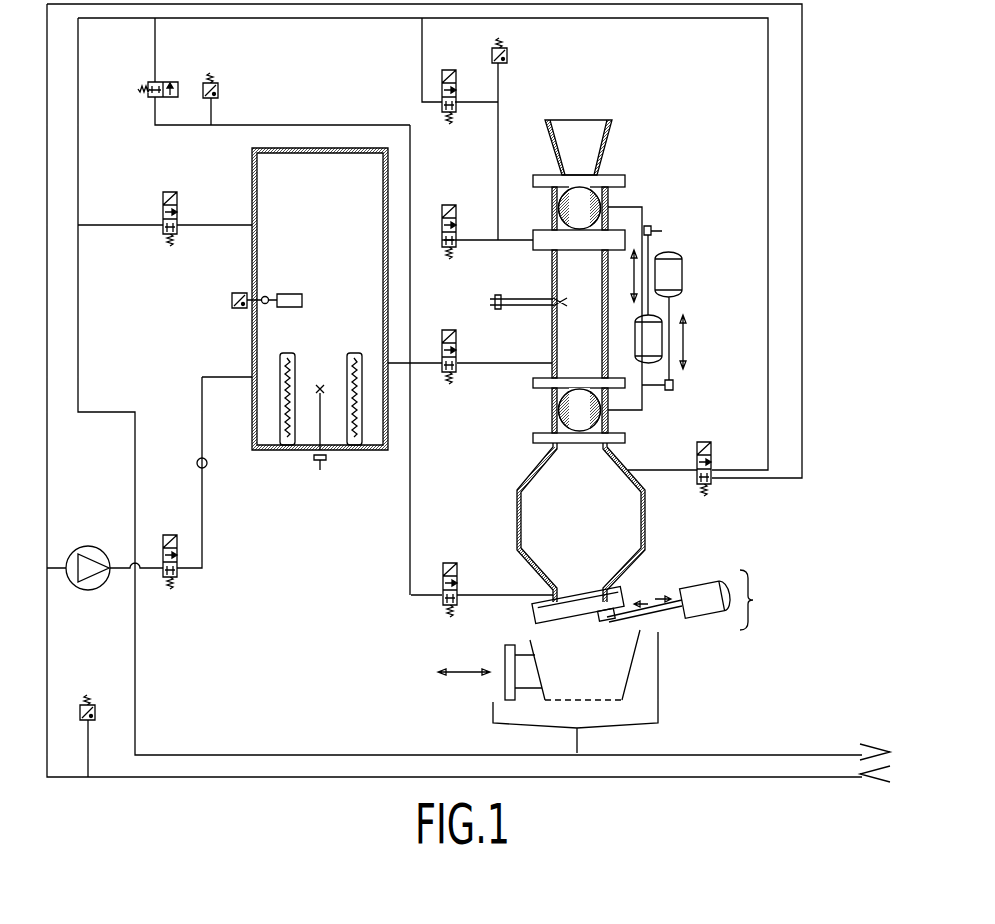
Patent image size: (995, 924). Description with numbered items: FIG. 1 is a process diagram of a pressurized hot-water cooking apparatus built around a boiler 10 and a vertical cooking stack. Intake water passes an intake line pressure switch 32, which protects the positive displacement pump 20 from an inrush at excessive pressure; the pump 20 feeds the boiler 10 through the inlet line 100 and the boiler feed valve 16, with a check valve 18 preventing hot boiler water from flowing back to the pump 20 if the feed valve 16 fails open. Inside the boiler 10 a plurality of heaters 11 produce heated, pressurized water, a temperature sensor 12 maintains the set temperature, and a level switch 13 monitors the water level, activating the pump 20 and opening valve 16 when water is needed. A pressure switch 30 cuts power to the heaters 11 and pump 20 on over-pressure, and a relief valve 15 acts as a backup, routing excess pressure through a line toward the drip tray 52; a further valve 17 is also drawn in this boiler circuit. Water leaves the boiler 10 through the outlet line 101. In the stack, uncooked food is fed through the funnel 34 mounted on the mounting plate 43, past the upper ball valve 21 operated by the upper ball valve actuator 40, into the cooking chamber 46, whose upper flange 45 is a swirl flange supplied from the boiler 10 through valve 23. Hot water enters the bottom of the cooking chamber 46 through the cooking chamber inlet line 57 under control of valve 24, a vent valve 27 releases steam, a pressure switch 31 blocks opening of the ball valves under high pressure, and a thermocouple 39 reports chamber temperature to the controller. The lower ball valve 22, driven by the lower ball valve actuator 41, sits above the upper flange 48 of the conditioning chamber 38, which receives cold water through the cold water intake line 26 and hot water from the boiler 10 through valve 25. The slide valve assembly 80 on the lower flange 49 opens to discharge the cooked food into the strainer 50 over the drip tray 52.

The boiler 10 is at (318, 147).
The heater 11 is at (284, 440).
The temperature sensor 12 is at (321, 462).
The level switch 13 is at (232, 302).
The relief valve 15 is at (150, 98).
The boiler feed valve 16 is at (180, 578).
The valve 17 is at (163, 228).
The check valve 18 is at (200, 458).
The positive displacement pump 20 is at (85, 545).
The upper ball valve 21 is at (608, 205).
The lower ball valve 22 is at (552, 411).
The valve 23 is at (449, 204).
The valve 24 is at (448, 330).
The hot water intake valve 25 is at (443, 568).
The cold water intake line 26 is at (705, 440).
The vent valve 27 is at (442, 76).
The pressure switch 30 is at (218, 88).
The pressure switch 31 is at (508, 58).
The intake line pressure switch 32 is at (96, 712).
The funnel 34 is at (590, 120).
The conditioning chamber 38 is at (516, 525).
The thermocouple 39 is at (515, 308).
The upper ball valve actuator 40 is at (652, 235).
The lower ball valve actuator 41 is at (672, 305).
The mounting plate 43 is at (625, 176).
The upper flange 45 is at (533, 232).
The cooking chamber 46 is at (548, 270).
The upper flange 48 is at (627, 437).
The lower flange 49 is at (535, 615).
The strainer 50 is at (504, 688).
The drip tray 52 is at (660, 704).
The cooking chamber inlet line 57 is at (477, 372).
The slide valve assembly 80 is at (698, 600).
The inlet line 100 is at (214, 543).
The outlet line 101 is at (400, 352).